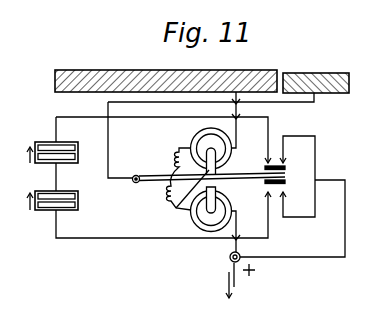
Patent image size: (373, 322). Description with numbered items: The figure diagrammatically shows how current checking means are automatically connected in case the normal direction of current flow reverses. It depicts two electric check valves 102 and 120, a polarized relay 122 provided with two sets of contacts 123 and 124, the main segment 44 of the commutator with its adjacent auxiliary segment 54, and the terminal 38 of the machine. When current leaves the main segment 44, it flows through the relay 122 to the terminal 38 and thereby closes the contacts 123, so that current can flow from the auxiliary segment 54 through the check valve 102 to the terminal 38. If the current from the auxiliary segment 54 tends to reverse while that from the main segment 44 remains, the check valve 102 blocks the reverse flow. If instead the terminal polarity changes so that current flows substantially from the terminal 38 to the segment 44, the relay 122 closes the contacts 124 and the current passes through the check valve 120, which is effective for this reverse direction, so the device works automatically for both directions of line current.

The main segment 44 is at (108, 78).
The auxiliary segment 54 is at (303, 80).
The check valve 102 is at (78, 163).
The check valve 120 is at (78, 209).
The polarized relay 122 is at (193, 215).
The contacts 123 is at (273, 163).
The contacts 124 is at (274, 186).
The terminal 38 is at (231, 258).